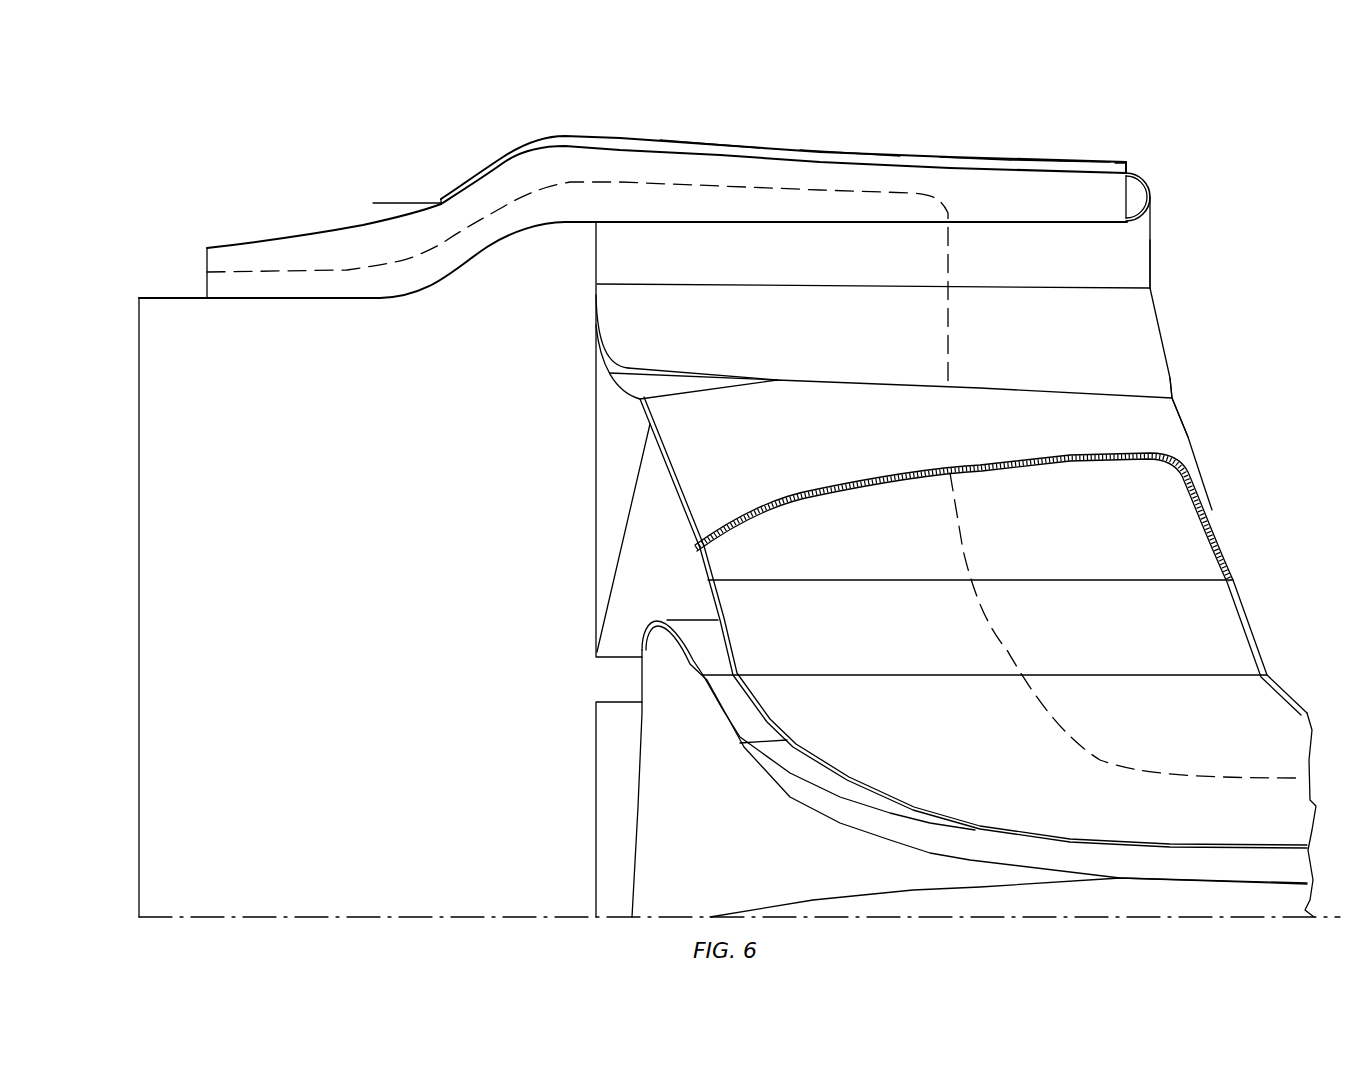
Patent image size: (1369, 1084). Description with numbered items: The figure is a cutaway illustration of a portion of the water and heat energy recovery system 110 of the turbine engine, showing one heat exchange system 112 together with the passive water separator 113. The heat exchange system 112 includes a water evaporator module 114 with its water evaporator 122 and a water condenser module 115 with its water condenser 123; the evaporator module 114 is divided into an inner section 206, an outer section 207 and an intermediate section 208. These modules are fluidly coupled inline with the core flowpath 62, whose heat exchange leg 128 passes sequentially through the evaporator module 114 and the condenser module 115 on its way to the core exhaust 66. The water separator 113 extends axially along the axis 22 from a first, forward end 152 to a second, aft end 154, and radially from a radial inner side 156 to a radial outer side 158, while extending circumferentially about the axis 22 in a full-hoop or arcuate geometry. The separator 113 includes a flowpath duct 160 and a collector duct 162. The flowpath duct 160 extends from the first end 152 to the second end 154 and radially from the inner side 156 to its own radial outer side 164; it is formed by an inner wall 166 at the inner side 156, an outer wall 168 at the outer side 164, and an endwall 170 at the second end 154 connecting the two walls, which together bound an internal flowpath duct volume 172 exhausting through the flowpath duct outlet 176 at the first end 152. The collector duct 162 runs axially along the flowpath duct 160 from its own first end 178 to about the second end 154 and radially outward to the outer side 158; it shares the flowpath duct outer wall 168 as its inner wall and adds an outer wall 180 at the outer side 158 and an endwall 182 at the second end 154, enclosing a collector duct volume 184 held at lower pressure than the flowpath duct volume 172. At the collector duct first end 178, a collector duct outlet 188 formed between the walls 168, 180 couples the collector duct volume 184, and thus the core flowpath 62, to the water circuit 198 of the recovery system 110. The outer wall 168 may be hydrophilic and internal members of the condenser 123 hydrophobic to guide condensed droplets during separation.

The axis 22 is at (305, 916).
The core flowpath 62 is at (947, 325).
The core exhaust 66 is at (207, 272).
The water and heat energy recovery system 110 is at (1260, 247).
The heat exchange system 112 is at (1204, 329).
The passive water separator 113 is at (1145, 135).
The water evaporator module 114 is at (1244, 566).
The water condenser module 115 is at (592, 545).
The water evaporator 122 is at (815, 339).
The water condenser 123 is at (825, 260).
The heat exchange leg 128 is at (1007, 650).
The first end 152 is at (139, 325).
The second end 154 is at (1153, 207).
The radial inner side 156 is at (1077, 224).
The radial outer side 158 is at (1035, 166).
The flowpath duct 160 is at (282, 234).
The collector duct 162 is at (614, 134).
The radial outer side of the flowpath duct 164 is at (985, 166).
The inner wall 166 is at (563, 226).
The outer wall 168 is at (850, 162).
The endwall 170 is at (1152, 186).
The flowpath duct volume 172 is at (1001, 204).
The flowpath duct outlet 176 is at (207, 262).
The first end of the collector duct 178 is at (447, 199).
The outer wall of the collector duct 180 is at (1087, 163).
The endwall of the collector duct 182 is at (1128, 165).
The collector duct volume 184 is at (708, 150).
The collector duct outlet 188 is at (441, 203).
The water circuit 198 is at (373, 203).
The inner section 206 is at (1310, 713).
The outer section 207 is at (1170, 378).
The intermediate section 208 is at (1188, 437).